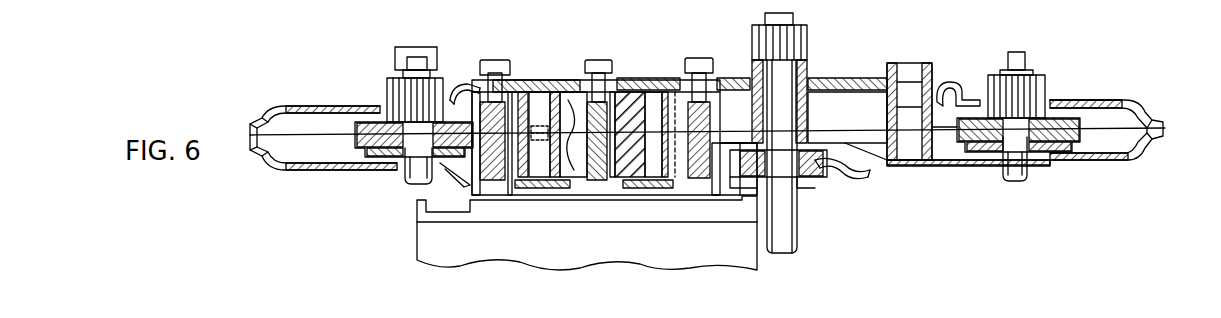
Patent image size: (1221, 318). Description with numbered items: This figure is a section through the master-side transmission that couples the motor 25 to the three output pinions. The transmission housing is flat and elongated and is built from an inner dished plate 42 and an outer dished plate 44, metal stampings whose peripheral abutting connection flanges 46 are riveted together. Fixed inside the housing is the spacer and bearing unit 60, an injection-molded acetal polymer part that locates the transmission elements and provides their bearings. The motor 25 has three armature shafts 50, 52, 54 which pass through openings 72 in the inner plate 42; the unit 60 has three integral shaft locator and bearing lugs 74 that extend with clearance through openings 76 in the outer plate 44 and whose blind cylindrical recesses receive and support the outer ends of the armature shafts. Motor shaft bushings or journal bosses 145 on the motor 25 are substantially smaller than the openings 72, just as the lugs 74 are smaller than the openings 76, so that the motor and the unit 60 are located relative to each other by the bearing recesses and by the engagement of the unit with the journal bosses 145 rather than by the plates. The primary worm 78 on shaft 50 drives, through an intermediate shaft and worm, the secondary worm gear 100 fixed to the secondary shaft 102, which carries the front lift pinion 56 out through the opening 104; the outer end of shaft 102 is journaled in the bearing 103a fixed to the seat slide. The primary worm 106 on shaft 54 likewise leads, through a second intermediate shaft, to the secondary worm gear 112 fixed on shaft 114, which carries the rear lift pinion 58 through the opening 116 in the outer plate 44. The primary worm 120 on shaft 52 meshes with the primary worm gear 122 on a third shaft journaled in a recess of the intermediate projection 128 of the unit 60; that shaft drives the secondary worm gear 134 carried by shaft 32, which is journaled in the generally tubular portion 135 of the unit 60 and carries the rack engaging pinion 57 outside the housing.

The motor 25 is at (417, 261).
The shaft 32 is at (782, 129).
The inner dished plate 42 is at (1067, 164).
The outer dished plate 44 is at (1083, 105).
The peripheral abutting connection flanges 46 is at (1157, 121).
The armature shaft 50 is at (510, 64).
The armature shaft 52 is at (603, 68).
The armature shaft 54 is at (693, 80).
The front lift pinion 56 is at (450, 92).
The rack engaging pinion 57 is at (808, 38).
The rear lift pinion 58 is at (1046, 80).
The spacer and bearing unit 60 is at (938, 102).
The openings 72 is at (473, 192).
The shaft locator and bearing lugs 74 is at (500, 63).
The openings 76 is at (478, 93).
The primary worm 78 is at (490, 190).
The secondary worm gear 100 is at (356, 142).
The secondary shaft 102 is at (418, 185).
The bearing 103a is at (396, 50).
The opening 104 is at (388, 104).
The primary worm 106 is at (698, 193).
The secondary worm gear 112 is at (1110, 104).
The shaft 114 is at (1019, 182).
The opening 116 is at (1055, 120).
The primary worm 120 is at (573, 90).
The primary worm gear 122 is at (577, 197).
The intermediate projection 128 is at (545, 190).
The secondary worm gear 134 is at (827, 190).
The tubular portion 135 is at (812, 111).
The journal bosses 145 is at (498, 190).